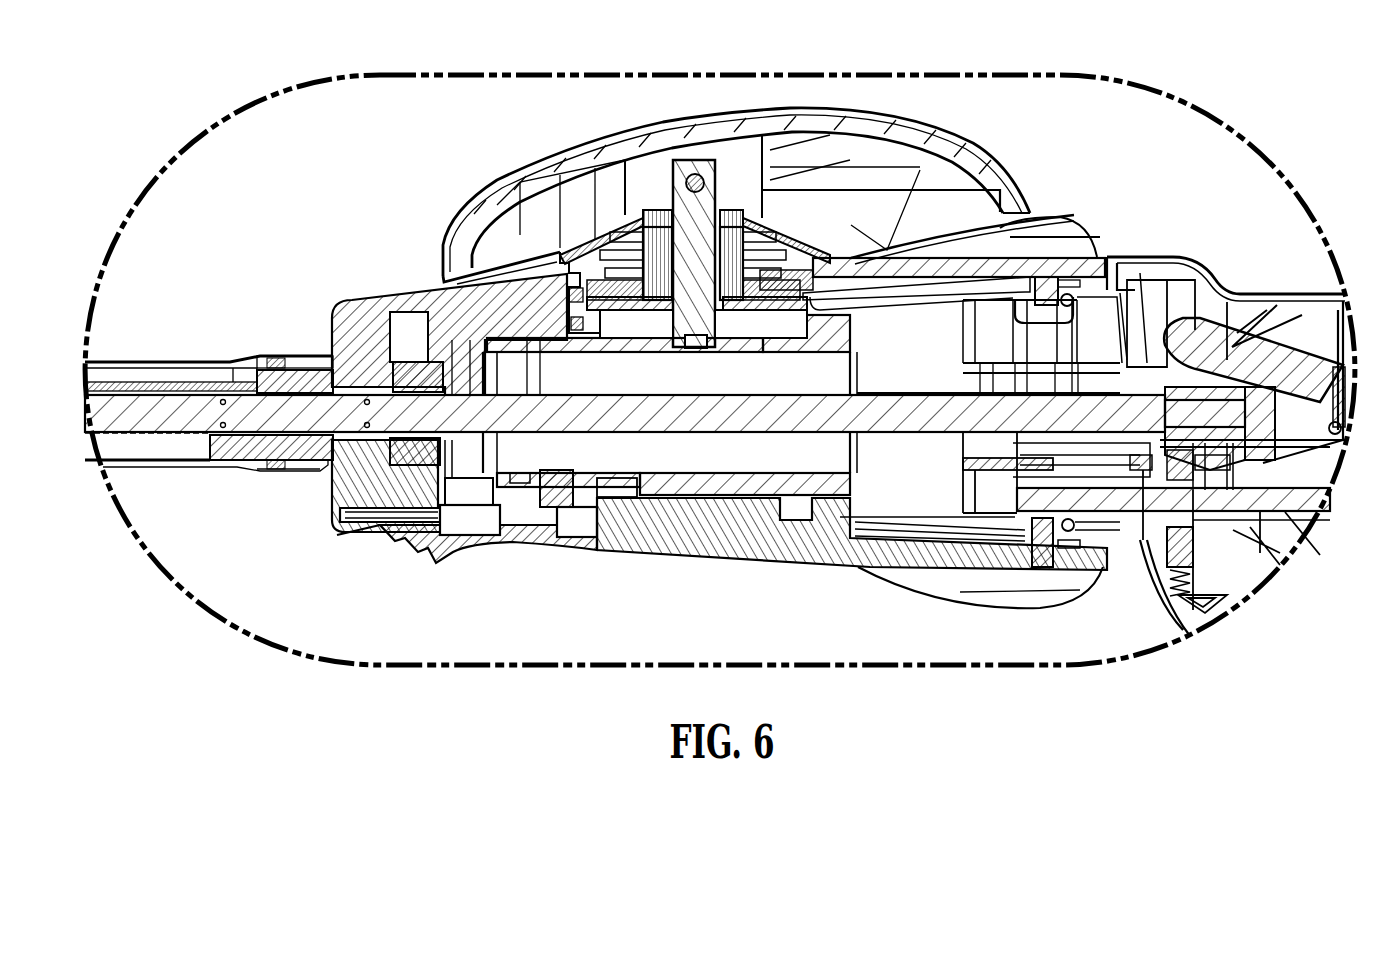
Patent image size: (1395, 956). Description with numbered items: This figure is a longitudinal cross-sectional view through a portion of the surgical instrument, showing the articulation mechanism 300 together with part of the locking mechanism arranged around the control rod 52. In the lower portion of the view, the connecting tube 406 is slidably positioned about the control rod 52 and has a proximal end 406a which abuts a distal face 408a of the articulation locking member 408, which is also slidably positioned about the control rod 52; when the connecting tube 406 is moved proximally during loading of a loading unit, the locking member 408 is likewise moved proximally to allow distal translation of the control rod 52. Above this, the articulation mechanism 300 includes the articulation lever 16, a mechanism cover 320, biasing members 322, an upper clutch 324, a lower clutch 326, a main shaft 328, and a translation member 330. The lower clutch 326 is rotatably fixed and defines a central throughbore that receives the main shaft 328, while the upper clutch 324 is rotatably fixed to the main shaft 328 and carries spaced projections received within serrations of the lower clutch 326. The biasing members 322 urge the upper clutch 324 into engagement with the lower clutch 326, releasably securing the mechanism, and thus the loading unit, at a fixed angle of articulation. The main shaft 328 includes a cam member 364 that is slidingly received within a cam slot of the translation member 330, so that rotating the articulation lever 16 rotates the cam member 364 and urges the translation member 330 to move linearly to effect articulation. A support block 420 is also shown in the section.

The articulation mechanism 300 is at (836, 66).
The articulation lever 16 is at (597, 158).
The upper clutch 324 is at (612, 183).
The lower clutch 326 is at (550, 268).
The main shaft 328 is at (707, 203).
The biasing members 322 is at (747, 240).
The mechanism cover 320 is at (763, 247).
The support block 420 is at (805, 327).
The connecting tube 406 is at (296, 365).
The proximal end 406a is at (450, 372).
The articulation locking member 408 is at (590, 352).
The cam member 364 is at (693, 350).
The control rod 52 is at (125, 418).
The distal face 408a is at (485, 457).
The translation member 330 is at (530, 340).